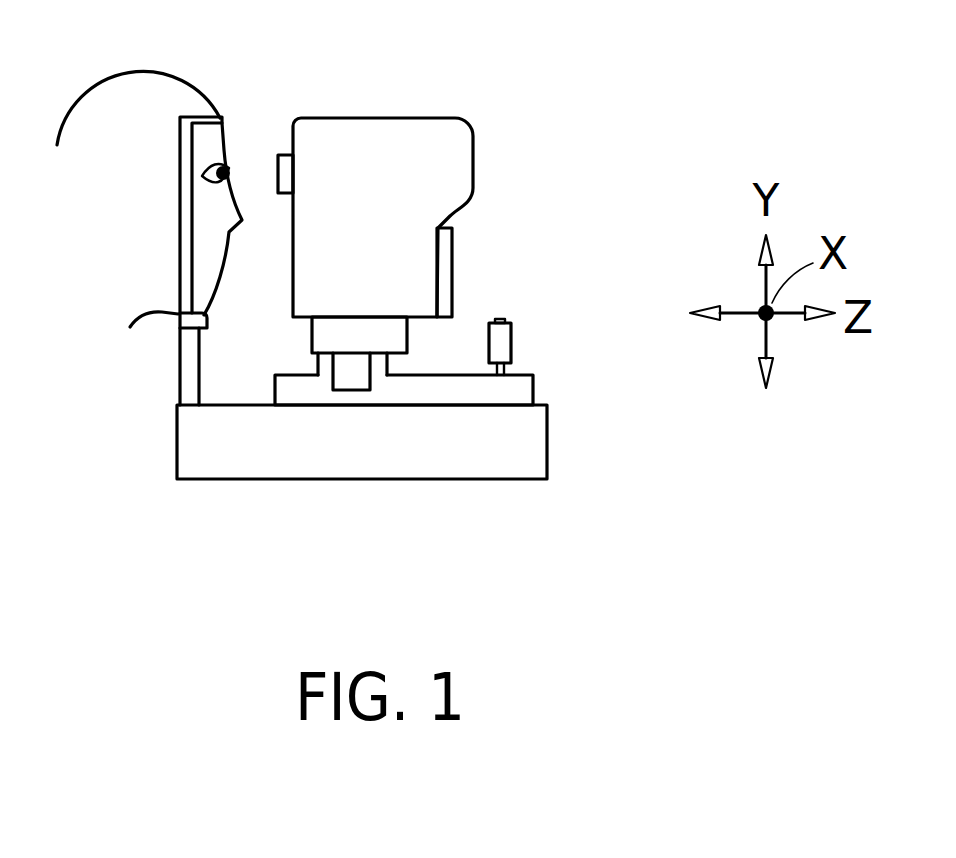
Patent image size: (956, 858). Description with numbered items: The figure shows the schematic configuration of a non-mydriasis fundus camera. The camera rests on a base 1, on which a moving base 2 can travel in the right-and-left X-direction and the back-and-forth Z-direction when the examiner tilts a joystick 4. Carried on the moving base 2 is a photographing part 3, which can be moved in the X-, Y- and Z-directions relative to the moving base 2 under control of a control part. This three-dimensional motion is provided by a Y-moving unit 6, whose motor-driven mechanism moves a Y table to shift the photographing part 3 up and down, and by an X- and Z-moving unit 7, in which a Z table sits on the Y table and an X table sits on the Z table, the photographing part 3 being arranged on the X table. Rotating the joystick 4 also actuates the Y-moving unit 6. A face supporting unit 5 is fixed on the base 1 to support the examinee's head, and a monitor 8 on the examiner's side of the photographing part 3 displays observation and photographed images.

The base 1 is at (442, 455).
The moving base 2 is at (522, 392).
The photographing part 3 is at (400, 137).
The joystick 4 is at (503, 343).
The face supporting unit 5 is at (125, 336).
The Y-moving unit 6 is at (348, 385).
The X- and Z-moving unit 7 is at (392, 333).
The monitor 8 is at (445, 258).